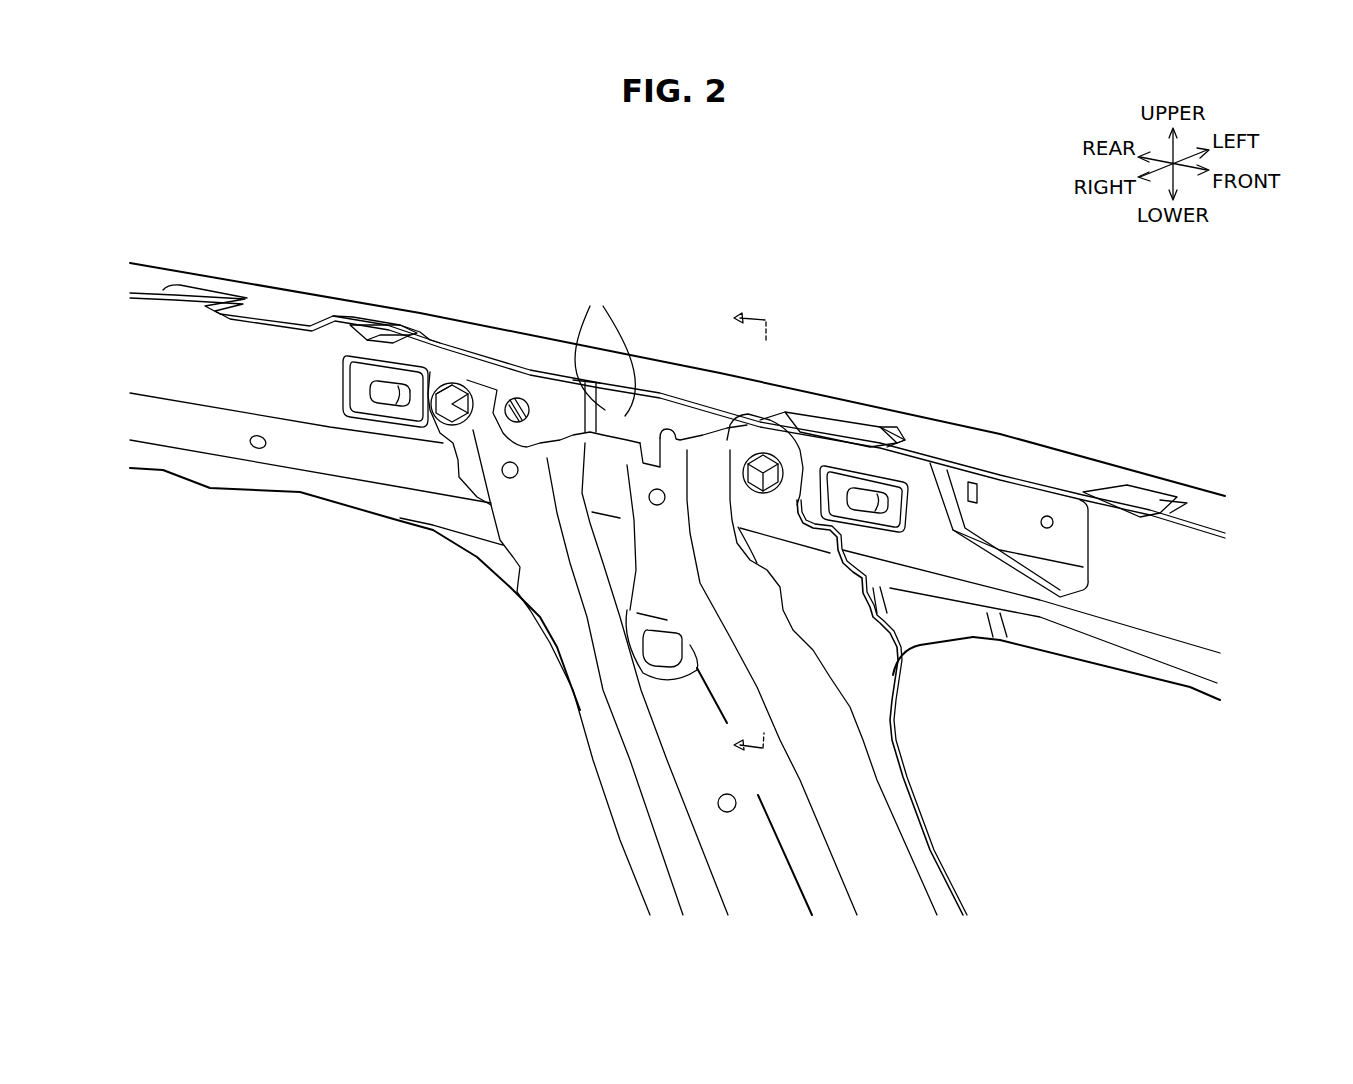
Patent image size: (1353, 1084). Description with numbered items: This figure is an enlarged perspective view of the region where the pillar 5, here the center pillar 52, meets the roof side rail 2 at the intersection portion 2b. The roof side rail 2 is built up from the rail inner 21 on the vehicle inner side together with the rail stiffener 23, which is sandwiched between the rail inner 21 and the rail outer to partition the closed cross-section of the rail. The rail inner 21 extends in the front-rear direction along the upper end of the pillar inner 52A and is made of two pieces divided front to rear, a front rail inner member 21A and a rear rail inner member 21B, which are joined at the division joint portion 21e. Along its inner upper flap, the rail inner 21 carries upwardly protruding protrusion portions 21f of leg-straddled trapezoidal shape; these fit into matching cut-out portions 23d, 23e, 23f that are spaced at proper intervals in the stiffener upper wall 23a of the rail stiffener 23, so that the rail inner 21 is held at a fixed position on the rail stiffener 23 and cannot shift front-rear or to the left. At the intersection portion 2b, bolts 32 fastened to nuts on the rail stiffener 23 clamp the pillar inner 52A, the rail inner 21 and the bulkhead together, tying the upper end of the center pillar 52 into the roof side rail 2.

The roof side rail 2 is at (239, 243).
The intersection portion 2b is at (605, 348).
The pillar 5 is at (726, 643).
The rail inner 21 is at (677, 482).
The front rail inner member 21A is at (1157, 607).
The rear rail inner member 21B is at (200, 467).
The division joint portion 21e is at (628, 400).
The protrusion portions 21f is at (347, 317).
The rail stiffener 23 is at (677, 405).
The stiffener upper wall 23a is at (983, 443).
The cut-out portion 23d is at (887, 417).
The cut-out portion 23e is at (387, 320).
The cut-out portion 23f is at (174, 296).
The bolt 32 is at (447, 397).
The center pillar 52 is at (726, 643).
The pillar inner 52A is at (880, 848).